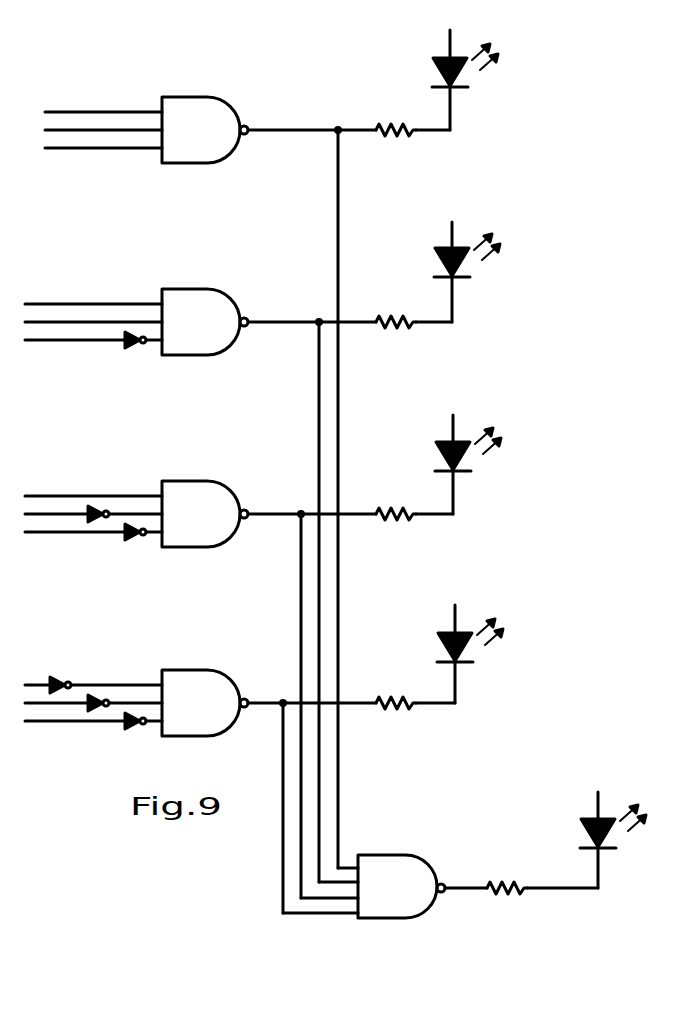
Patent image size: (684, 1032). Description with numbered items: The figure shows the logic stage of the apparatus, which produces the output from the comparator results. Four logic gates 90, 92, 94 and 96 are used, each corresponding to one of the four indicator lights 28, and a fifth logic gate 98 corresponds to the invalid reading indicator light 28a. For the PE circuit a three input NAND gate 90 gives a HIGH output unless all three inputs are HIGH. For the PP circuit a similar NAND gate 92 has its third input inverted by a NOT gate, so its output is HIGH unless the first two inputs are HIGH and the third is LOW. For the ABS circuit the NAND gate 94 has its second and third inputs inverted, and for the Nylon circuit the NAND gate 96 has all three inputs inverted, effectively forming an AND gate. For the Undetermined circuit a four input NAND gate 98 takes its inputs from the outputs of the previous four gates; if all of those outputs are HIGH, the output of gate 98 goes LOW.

The three input NAND gate 90 is at (195, 117).
The three input NAND gate 92 is at (204, 312).
The three input NAND gate 94 is at (204, 503).
The three input NAND gate 96 is at (212, 685).
The four input NAND gate 98 is at (398, 880).
The indicator light 28 is at (463, 80).
The invalid reading indicator light 28a is at (604, 818).